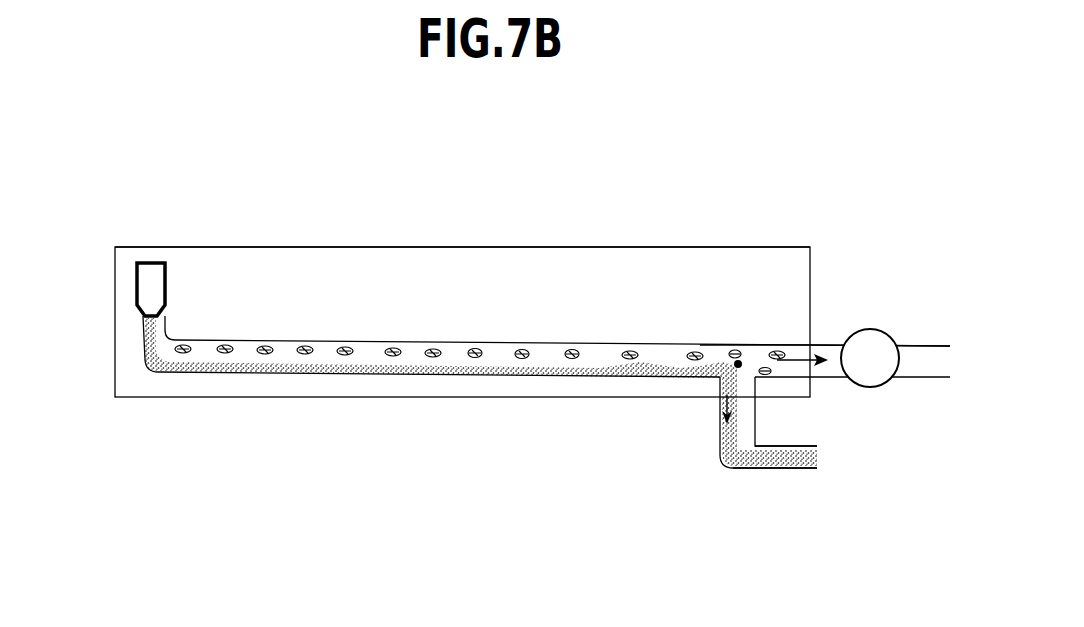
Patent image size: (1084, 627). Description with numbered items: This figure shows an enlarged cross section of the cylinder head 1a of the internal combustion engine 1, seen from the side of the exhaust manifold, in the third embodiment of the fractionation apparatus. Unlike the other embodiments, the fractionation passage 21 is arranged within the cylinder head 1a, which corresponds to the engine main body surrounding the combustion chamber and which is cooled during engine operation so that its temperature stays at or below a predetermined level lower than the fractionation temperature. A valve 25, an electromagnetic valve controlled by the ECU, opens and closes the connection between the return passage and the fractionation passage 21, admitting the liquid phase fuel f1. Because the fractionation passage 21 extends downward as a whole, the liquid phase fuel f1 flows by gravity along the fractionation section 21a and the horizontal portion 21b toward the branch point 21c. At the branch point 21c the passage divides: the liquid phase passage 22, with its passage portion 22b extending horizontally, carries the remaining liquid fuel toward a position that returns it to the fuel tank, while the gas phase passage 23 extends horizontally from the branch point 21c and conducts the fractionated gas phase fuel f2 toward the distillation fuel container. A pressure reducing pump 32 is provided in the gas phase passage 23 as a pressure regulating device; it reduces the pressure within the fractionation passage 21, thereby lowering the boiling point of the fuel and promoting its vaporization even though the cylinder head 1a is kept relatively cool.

The internal combustion engine 1 is at (514, 192).
The cylinder head 1a is at (555, 247).
The fractionation passage 21 is at (428, 282).
The fractionation section 21a is at (475, 342).
The horizontal portion 21b is at (700, 345).
The branch point 21c is at (718, 378).
The liquid phase passage 22 is at (742, 470).
The passage portion 22b is at (800, 470).
The gas phase passage 23 is at (825, 343).
The valve 25 is at (138, 278).
The pressure reducing pump 32 is at (877, 387).
The liquid phase fuel f1 is at (268, 340).
The gas phase fuel f2 is at (268, 340).